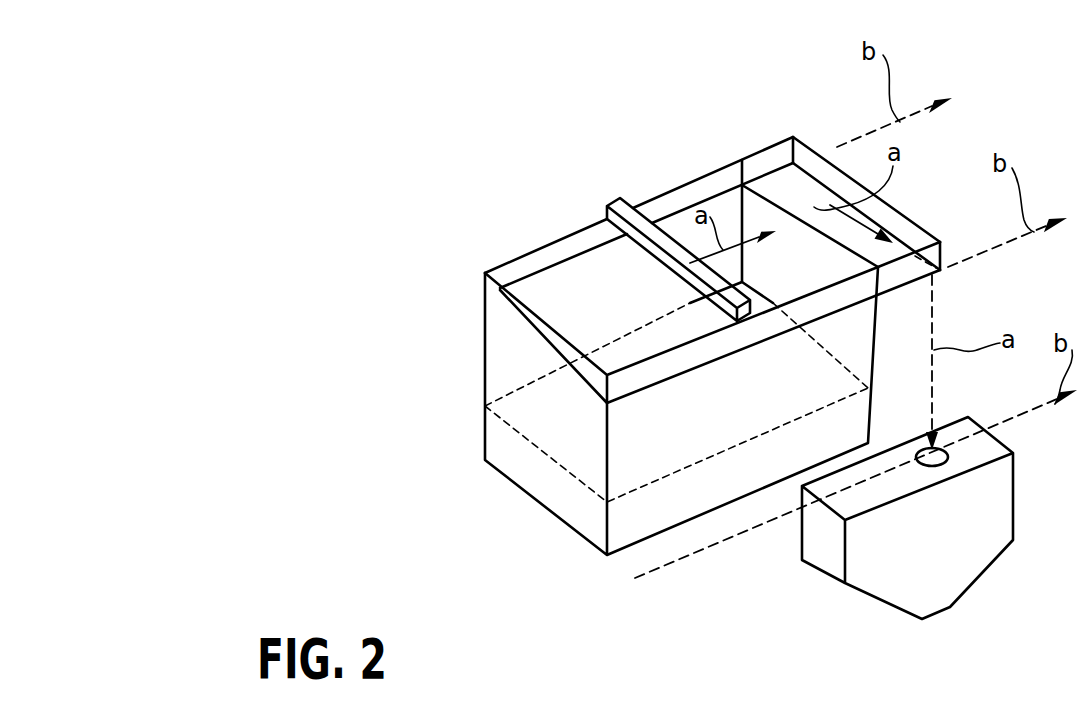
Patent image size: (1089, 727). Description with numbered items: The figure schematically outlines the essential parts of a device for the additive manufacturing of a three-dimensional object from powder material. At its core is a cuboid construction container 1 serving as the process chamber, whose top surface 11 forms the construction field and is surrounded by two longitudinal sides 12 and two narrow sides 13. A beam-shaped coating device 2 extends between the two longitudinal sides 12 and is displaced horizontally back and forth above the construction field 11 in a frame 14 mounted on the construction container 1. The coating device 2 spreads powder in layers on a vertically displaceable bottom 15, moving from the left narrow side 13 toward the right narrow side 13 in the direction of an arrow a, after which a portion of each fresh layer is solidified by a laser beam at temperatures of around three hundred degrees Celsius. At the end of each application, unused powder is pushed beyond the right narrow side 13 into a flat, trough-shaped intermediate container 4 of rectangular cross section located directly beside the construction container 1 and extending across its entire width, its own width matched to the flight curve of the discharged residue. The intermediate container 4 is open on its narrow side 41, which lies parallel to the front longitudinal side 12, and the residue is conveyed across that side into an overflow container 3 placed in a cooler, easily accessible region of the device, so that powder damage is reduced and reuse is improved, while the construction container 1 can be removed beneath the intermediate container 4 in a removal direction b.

The construction container 1 is at (546, 529).
The coating device 2 is at (620, 200).
The overflow container 3 is at (957, 563).
The intermediate container 4 is at (900, 210).
The surface 11 is at (588, 290).
The longitudinal sides 12 is at (702, 180).
The narrow sides 13 is at (780, 191).
The frame 14 is at (500, 296).
The bottom 15 is at (542, 450).
The narrow side 41 is at (936, 270).